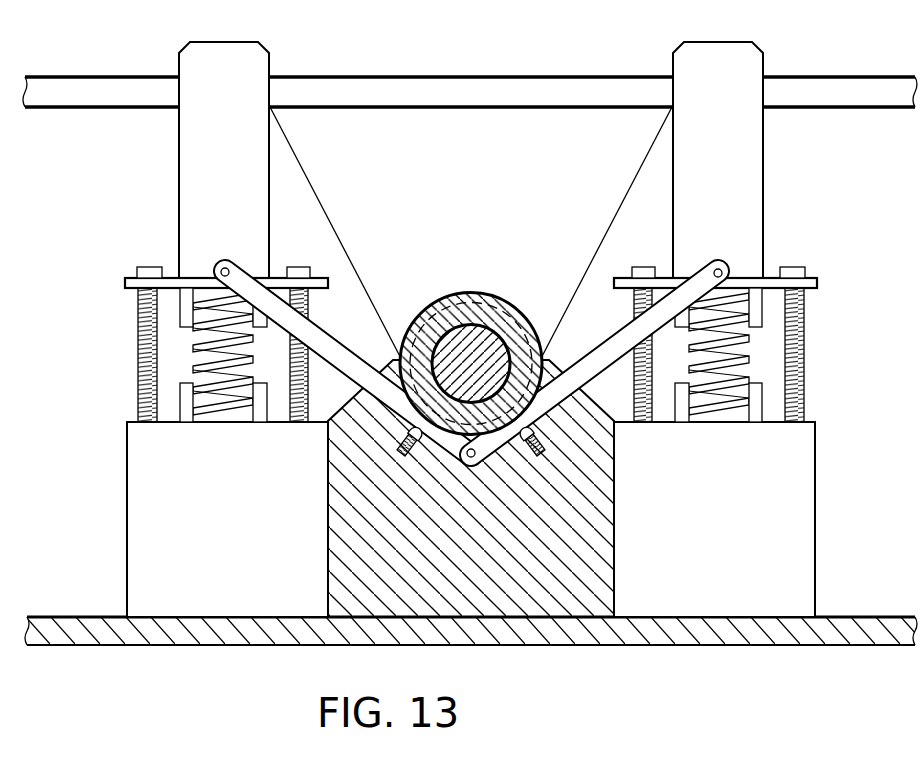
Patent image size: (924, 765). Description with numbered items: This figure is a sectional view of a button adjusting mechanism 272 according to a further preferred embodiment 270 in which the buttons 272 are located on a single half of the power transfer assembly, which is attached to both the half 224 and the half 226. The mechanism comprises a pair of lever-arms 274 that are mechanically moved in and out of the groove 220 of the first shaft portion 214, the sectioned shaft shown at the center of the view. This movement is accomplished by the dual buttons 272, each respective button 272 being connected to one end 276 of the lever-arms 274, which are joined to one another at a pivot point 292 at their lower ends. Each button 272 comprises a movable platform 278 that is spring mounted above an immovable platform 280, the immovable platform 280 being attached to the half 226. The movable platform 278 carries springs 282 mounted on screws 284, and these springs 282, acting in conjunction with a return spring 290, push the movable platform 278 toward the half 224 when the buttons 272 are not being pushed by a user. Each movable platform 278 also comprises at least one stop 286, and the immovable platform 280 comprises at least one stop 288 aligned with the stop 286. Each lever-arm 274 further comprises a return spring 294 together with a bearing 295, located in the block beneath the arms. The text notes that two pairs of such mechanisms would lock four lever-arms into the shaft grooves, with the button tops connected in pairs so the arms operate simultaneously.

The preferred embodiment 270 is at (194, 662).
The button adjusting mechanism 272 is at (241, 42).
The half 224 is at (612, 77).
The lever-arm 274 is at (337, 337).
The end of lever-arm 276 is at (218, 262).
The movable platform 278 is at (125, 282).
The immovable platform 280 is at (127, 548).
The spring 282 is at (138, 333).
The screw 284 is at (138, 407).
The stop 286 is at (180, 303).
The stop 288 is at (180, 400).
The return spring 290 is at (193, 362).
The pivot point 292 is at (478, 460).
The return spring 294 is at (397, 462).
The bearing 295 is at (405, 432).
The first shaft portion 214 is at (472, 292).
The groove 220 is at (425, 320).
The half 226 is at (758, 647).